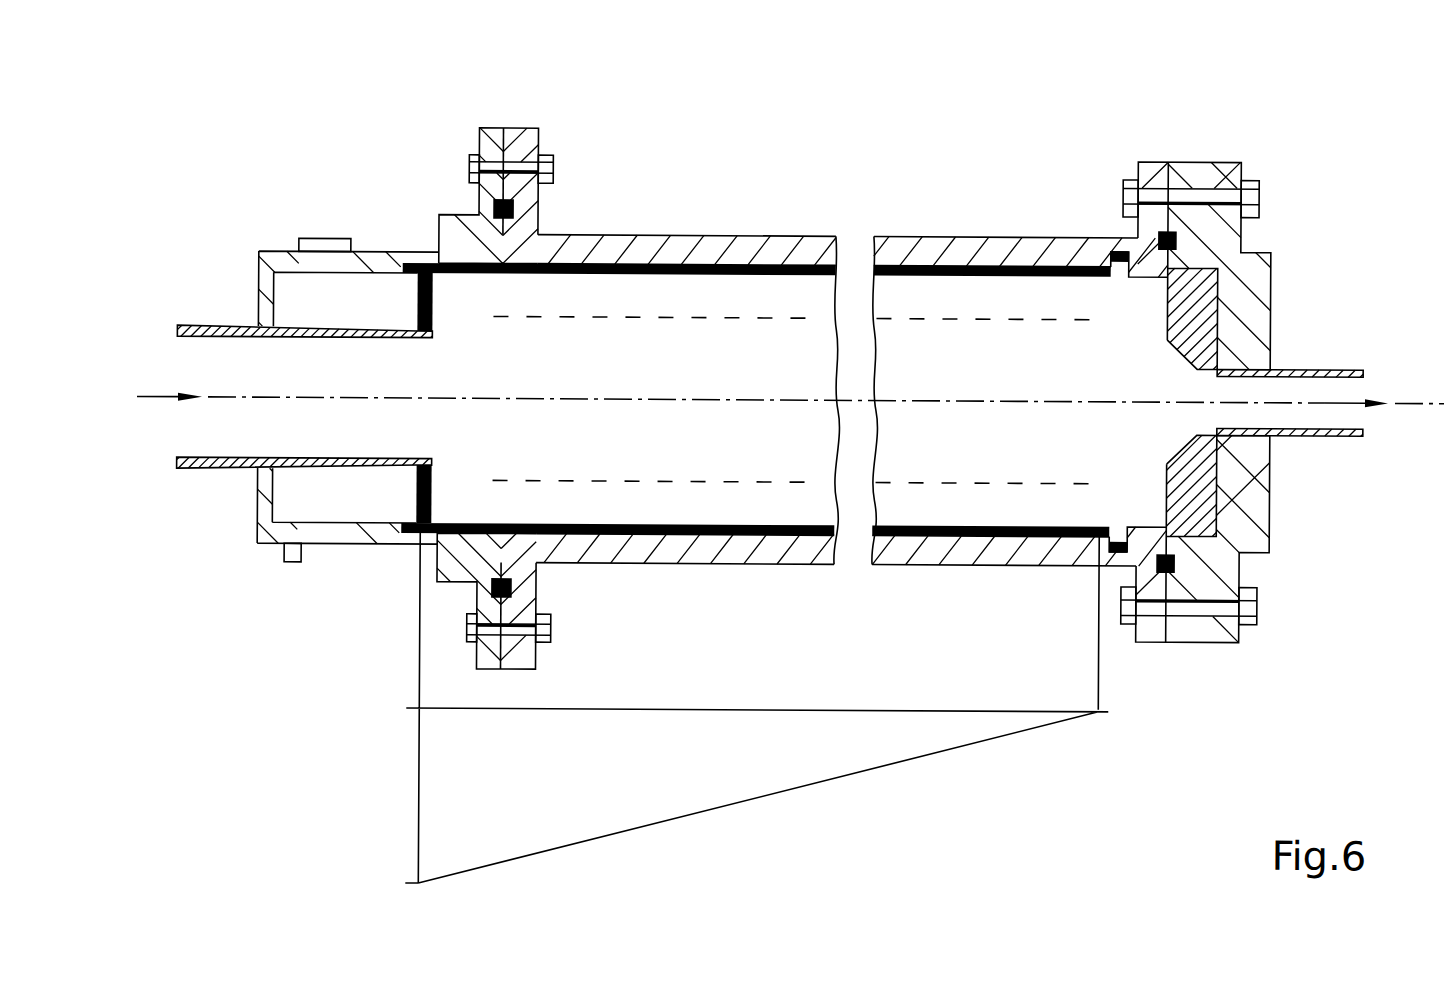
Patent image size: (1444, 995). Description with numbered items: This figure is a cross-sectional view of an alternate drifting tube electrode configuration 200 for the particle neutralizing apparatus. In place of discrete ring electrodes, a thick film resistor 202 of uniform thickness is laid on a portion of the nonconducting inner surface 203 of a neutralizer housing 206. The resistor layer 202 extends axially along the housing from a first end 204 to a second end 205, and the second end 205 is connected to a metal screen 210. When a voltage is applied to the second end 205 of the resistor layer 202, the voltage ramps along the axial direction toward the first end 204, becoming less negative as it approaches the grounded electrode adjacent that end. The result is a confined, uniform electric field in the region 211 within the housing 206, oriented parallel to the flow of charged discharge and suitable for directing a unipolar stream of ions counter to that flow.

The measuring tube arrangement 200 is at (1040, 118).
The thick film resistor 202 is at (622, 263).
The nonconducting inner surface 203 is at (750, 280).
The first end 204 is at (1102, 264).
The second end 205 is at (400, 259).
The neutralizer housing 206 is at (923, 226).
The metal screen 210 is at (418, 499).
The region 211 is at (1130, 340).